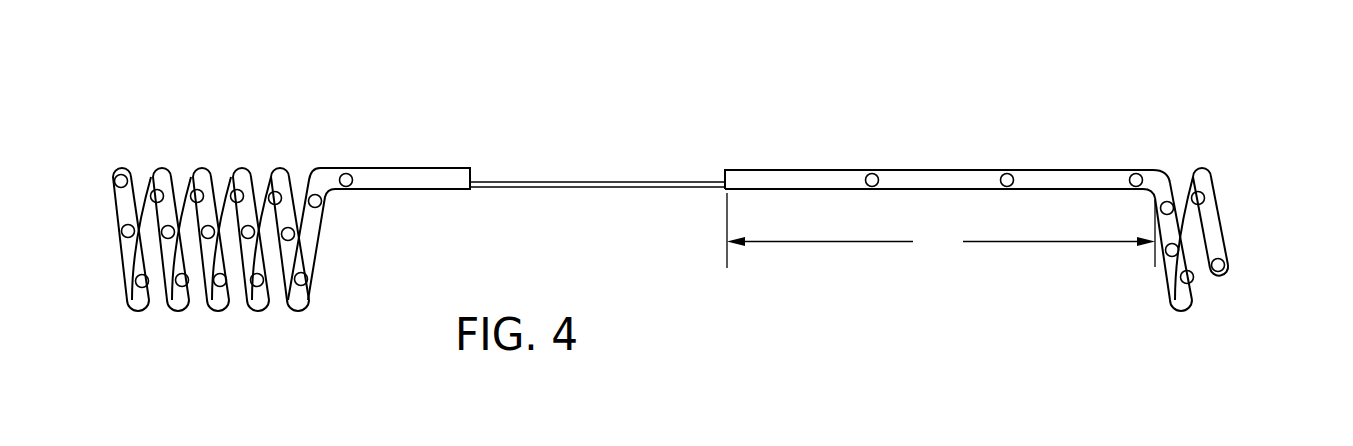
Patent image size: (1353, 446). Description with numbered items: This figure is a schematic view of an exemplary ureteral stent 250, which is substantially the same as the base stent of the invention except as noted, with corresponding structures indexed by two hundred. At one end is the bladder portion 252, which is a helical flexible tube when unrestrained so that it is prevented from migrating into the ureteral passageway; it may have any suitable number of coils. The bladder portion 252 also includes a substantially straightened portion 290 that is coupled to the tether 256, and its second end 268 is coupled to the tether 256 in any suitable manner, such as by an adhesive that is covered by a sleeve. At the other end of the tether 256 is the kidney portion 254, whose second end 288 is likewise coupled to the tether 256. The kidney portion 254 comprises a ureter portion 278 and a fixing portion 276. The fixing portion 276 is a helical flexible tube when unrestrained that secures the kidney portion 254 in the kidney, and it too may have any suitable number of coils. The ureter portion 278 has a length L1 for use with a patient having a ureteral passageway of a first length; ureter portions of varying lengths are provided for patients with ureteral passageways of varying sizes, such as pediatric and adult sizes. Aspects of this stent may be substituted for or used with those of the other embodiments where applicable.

The ureteral stent 250 is at (923, 172).
The bladder portion 252 is at (229, 130).
The kidney portion 254 is at (1190, 193).
The tether 256 is at (595, 188).
The second end of the bladder portion 268 is at (472, 172).
The fixing portion 276 is at (1205, 171).
The ureter portion 278 is at (928, 170).
The second end of the kidney portion 288 is at (725, 171).
The substantially straightened portion 290 is at (402, 168).